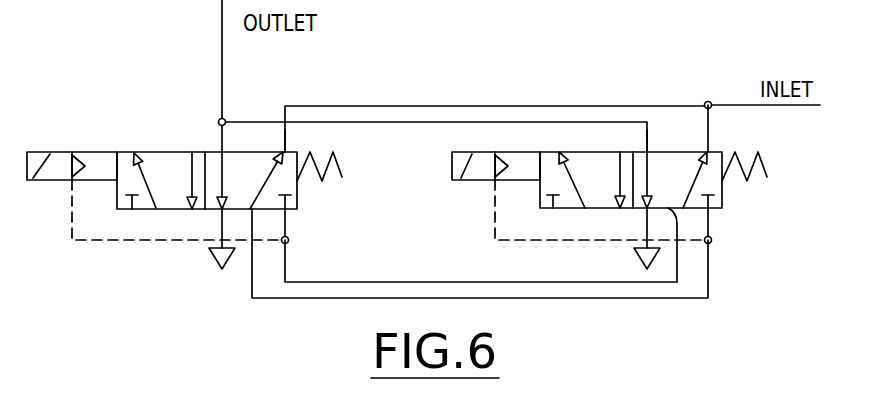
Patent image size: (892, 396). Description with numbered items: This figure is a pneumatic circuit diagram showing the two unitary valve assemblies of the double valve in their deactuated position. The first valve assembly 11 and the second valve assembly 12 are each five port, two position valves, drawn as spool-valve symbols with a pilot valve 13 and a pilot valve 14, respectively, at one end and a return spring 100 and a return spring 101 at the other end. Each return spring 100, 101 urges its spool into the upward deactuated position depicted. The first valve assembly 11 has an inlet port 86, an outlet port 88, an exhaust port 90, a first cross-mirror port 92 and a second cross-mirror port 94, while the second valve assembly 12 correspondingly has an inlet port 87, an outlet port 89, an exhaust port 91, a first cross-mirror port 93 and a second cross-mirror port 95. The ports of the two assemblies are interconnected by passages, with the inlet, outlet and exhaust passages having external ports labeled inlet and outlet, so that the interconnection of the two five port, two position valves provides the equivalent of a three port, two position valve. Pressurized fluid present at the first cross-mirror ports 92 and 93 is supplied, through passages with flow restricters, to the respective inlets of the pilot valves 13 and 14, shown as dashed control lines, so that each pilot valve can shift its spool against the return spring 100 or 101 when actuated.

The valve assembly 11 is at (156, 109).
The valve assembly 12 is at (466, 248).
The pilot valve 13 is at (93, 150).
The pilot valve 14 is at (470, 181).
The inlet port 86 is at (282, 150).
The inlet port 87 is at (712, 150).
The outlet port 88 is at (218, 150).
The outlet port 89 is at (647, 150).
The exhaust port 90 is at (219, 211).
The exhaust port 91 is at (645, 210).
The first cross-mirror port 92 is at (288, 212).
The first cross-mirror port 93 is at (712, 211).
The second cross-mirror port 94 is at (251, 209).
The second cross-mirror port 95 is at (683, 208).
The return spring 100 is at (465, 134).
The return spring 101 is at (766, 162).